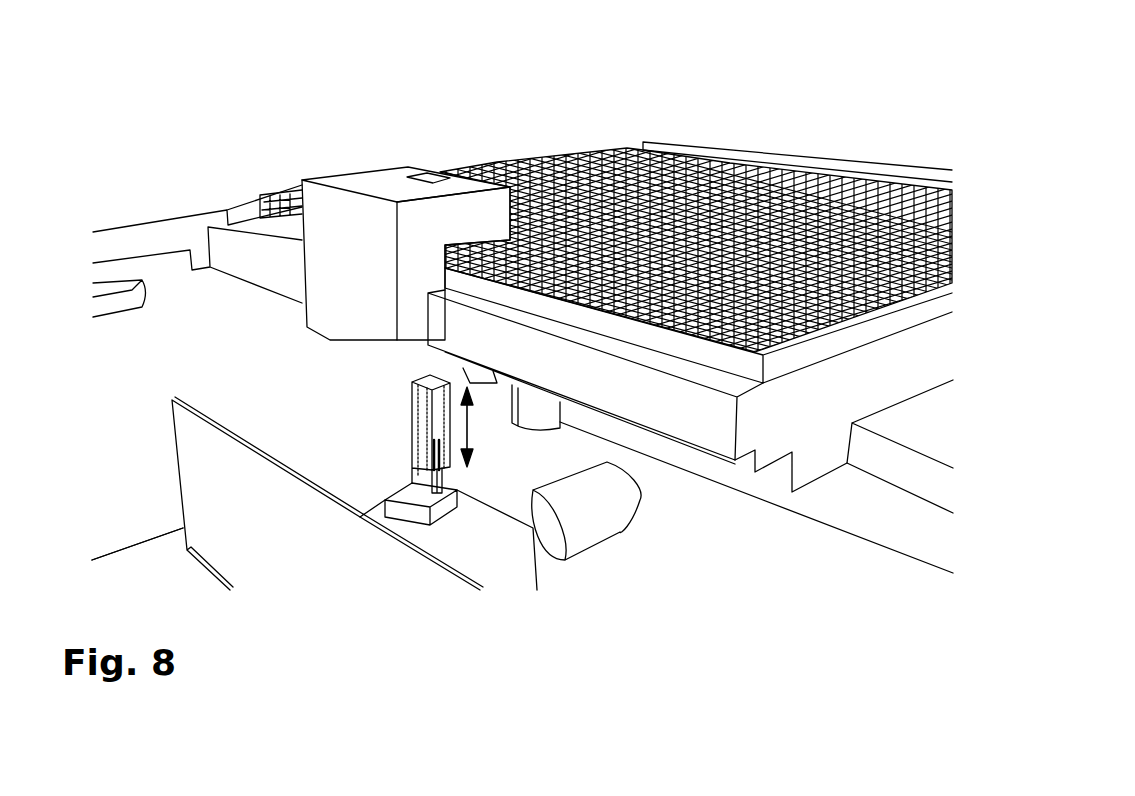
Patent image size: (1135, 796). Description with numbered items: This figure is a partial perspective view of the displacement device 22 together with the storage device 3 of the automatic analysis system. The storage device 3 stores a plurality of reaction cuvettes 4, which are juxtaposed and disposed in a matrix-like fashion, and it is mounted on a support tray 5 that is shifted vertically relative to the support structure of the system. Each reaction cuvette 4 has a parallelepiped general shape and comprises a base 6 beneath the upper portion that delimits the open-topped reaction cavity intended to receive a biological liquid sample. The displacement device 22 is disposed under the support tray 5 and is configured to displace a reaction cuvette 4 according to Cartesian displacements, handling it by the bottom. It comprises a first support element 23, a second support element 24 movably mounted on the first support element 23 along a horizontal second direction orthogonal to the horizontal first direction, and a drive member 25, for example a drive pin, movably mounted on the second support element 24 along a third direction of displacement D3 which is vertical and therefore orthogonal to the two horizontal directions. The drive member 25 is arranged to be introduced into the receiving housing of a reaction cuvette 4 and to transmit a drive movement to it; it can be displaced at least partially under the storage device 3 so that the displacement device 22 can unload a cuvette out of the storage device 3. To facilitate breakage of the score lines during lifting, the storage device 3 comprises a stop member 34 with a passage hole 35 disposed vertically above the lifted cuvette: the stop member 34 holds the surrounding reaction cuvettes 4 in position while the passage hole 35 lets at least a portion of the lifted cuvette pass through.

The storage device 3 is at (838, 147).
The reaction cuvette 4 is at (423, 400).
The support tray 5 is at (888, 465).
The base 6 is at (425, 458).
The displacement device 22 is at (288, 568).
The first support element 23 is at (197, 467).
The second support element 24 is at (508, 562).
The drive member 25 is at (425, 497).
The stop member 34 is at (375, 183).
The passage hole 35 is at (427, 183).
The third direction of displacement D3 is at (473, 427).